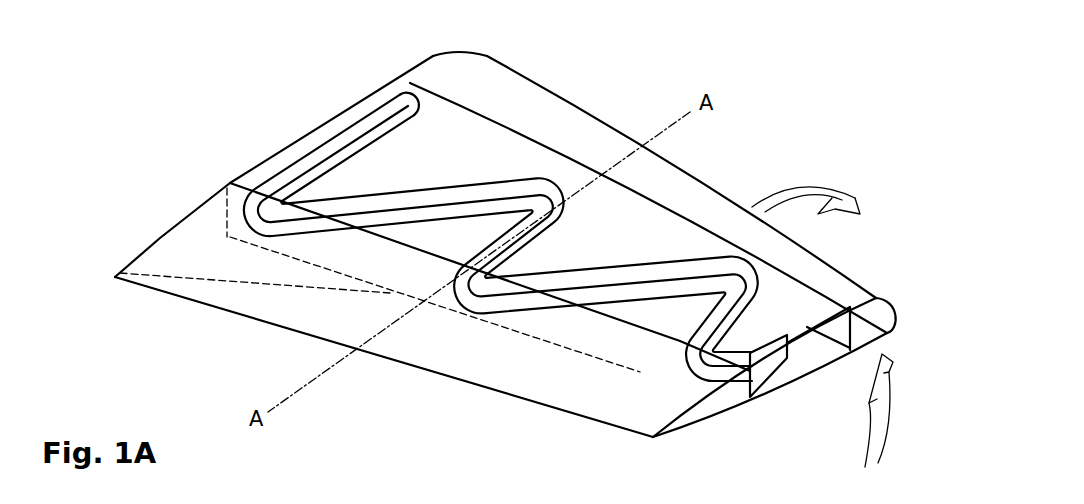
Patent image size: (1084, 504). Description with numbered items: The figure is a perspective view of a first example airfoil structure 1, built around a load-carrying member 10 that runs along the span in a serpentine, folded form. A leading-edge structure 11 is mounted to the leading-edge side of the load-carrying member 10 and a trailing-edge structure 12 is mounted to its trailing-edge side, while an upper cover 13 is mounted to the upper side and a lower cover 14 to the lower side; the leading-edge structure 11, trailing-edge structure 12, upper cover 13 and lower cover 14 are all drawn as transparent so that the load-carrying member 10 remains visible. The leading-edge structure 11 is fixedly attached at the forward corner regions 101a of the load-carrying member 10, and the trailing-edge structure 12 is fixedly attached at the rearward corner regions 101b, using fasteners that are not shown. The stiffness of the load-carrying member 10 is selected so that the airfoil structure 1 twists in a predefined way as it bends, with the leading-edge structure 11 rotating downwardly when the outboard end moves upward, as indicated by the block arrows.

The airfoil structure 1 is at (494, 237).
The load-carrying member 10 is at (519, 218).
The leading-edge structure 11 is at (567, 127).
The trailing-edge structure 12 is at (233, 257).
The upper cover 13 is at (707, 188).
The lower cover 14 is at (780, 380).
The forward corner regions 101a is at (552, 186).
The rearward corner regions 101b is at (249, 222).